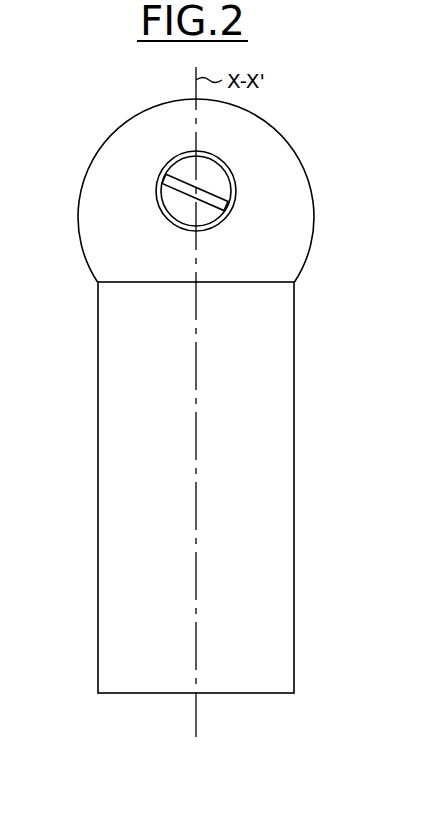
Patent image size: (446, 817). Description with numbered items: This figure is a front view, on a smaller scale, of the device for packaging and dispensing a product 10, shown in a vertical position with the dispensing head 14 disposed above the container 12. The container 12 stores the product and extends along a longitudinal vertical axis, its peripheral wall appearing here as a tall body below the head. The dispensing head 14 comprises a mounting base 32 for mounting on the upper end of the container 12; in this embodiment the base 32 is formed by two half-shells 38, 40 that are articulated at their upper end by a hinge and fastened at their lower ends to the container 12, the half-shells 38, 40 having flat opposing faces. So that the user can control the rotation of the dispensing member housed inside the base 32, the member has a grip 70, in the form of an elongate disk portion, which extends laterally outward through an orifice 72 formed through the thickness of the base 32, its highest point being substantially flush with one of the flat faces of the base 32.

The device for packaging and dispensing a product 10 is at (293, 98).
The container 12 is at (295, 488).
The dispensing head 14 is at (121, 124).
The mounting base 32 is at (297, 182).
The half-shell 38 is at (313, 222).
The half-shell 40 is at (79, 221).
The grip 70 is at (205, 193).
The orifice 72 is at (172, 178).